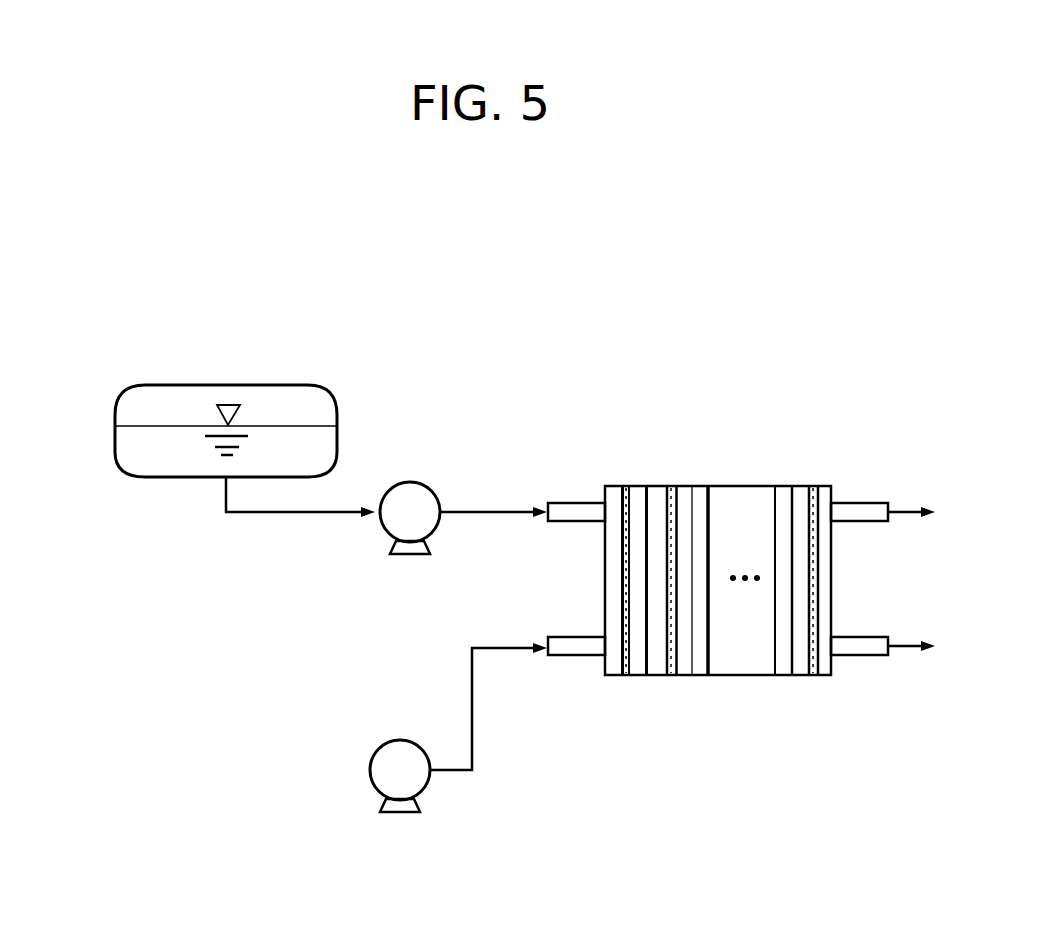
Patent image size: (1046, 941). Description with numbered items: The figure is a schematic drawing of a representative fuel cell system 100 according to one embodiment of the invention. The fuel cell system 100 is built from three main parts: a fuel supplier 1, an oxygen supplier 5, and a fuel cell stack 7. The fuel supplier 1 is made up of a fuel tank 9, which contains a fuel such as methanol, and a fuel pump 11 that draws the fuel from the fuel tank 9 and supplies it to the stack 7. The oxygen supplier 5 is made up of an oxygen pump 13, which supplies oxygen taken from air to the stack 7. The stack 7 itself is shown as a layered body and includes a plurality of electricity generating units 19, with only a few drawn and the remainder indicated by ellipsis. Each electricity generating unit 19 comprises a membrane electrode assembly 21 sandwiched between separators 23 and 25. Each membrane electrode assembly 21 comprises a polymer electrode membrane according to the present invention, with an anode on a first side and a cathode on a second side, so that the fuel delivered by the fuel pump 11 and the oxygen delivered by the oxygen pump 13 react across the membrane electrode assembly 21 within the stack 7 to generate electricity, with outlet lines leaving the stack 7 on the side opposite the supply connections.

The fuel cell system 100 is at (495, 501).
The fuel supplier 1 is at (301, 447).
The oxygen supplier 5 is at (431, 727).
The fuel cell stack 7 is at (741, 578).
The fuel tank 9 is at (221, 385).
The fuel pump 11 is at (421, 484).
The oxygen pump 13 is at (407, 743).
The electricity generating unit 19 is at (628, 729).
The membrane electrode assembly 21 is at (672, 675).
The separator 23 is at (655, 675).
The separator 25 is at (688, 675).